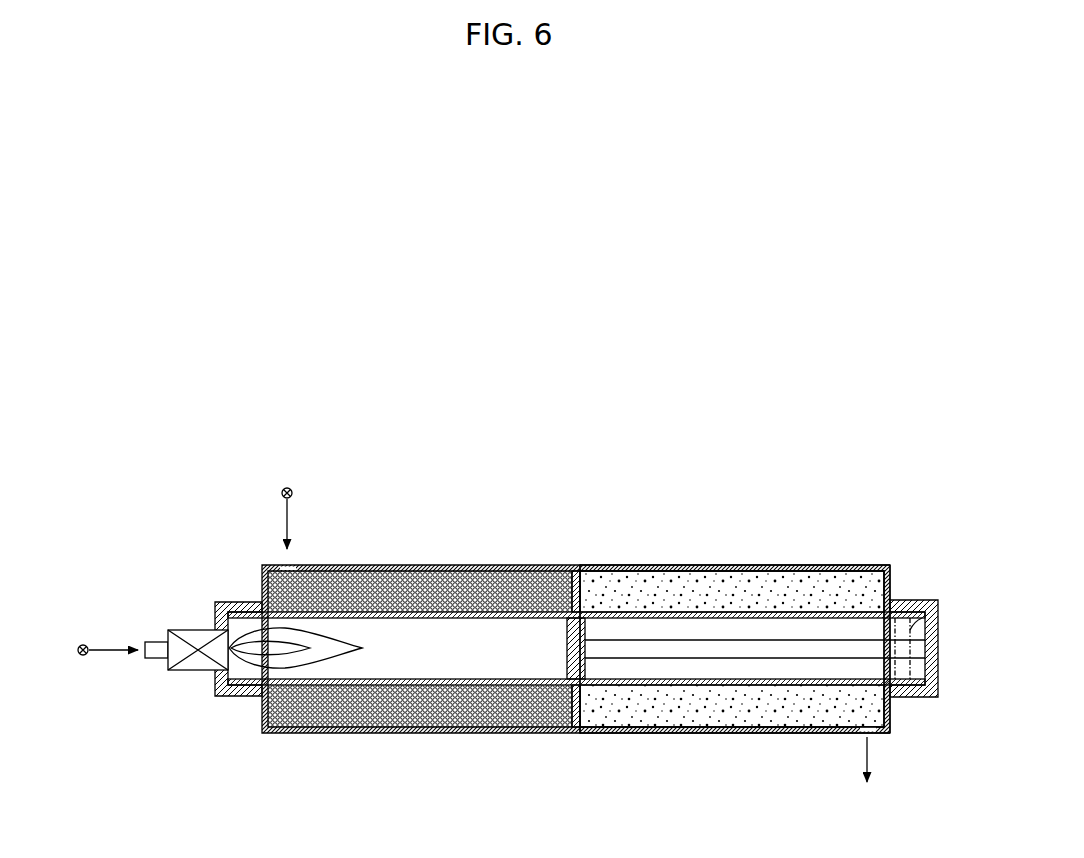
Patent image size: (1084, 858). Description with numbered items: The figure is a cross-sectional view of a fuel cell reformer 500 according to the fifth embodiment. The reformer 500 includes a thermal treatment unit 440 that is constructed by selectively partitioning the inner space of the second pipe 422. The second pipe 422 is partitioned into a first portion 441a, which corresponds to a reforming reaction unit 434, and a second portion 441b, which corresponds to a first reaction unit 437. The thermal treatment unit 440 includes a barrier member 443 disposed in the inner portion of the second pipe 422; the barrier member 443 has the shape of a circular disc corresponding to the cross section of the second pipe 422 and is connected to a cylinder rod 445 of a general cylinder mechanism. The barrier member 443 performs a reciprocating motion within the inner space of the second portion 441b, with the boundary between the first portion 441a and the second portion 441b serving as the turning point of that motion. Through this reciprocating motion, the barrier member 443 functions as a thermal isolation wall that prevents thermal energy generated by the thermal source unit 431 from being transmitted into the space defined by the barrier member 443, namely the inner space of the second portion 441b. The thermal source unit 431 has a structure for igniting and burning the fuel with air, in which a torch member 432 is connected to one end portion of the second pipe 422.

The fuel cell reformer 500 is at (572, 488).
The thermal source unit 431 is at (223, 656).
The torch member 432 is at (184, 630).
The reforming reaction unit 434 is at (410, 759).
The first reaction unit 437 is at (770, 759).
The thermal treatment unit 440 is at (562, 638).
The barrier member 443 is at (592, 632).
The cylinder rod 445 is at (723, 640).
The first portion 441a is at (546, 706).
The second portion 441b is at (621, 702).
The second pipe 422 is at (576, 710).